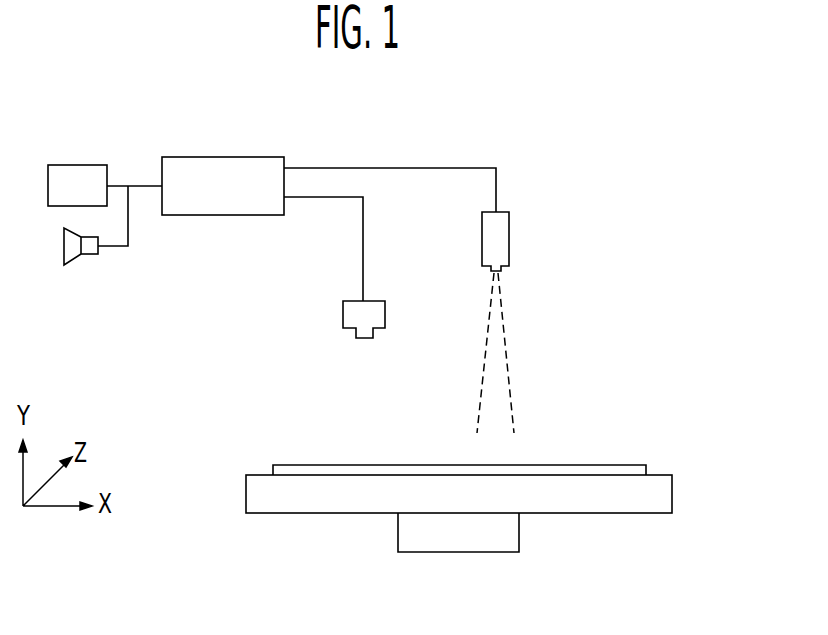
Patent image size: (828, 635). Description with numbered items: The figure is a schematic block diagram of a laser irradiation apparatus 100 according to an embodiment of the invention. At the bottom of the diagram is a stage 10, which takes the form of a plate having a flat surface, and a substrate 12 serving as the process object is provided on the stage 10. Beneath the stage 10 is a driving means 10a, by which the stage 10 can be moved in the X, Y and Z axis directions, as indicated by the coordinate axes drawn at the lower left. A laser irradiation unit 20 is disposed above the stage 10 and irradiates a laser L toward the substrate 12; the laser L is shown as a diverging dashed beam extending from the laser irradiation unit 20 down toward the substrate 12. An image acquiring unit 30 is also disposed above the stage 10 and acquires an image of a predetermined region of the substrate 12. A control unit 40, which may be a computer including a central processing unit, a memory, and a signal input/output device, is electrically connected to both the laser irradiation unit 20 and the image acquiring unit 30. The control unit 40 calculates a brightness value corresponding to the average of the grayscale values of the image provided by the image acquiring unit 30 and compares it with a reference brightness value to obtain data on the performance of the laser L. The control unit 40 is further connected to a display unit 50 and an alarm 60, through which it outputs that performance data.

The laser irradiation apparatus 100 is at (578, 135).
The stage 10 is at (672, 493).
The driving means 10a is at (519, 535).
The substrate 12 is at (633, 465).
The laser irradiation unit 20 is at (509, 225).
The image acquiring unit 30 is at (385, 312).
The control unit 40 is at (222, 157).
The display unit 50 is at (78, 165).
The alarm 60 is at (88, 254).
The laser L is at (505, 350).